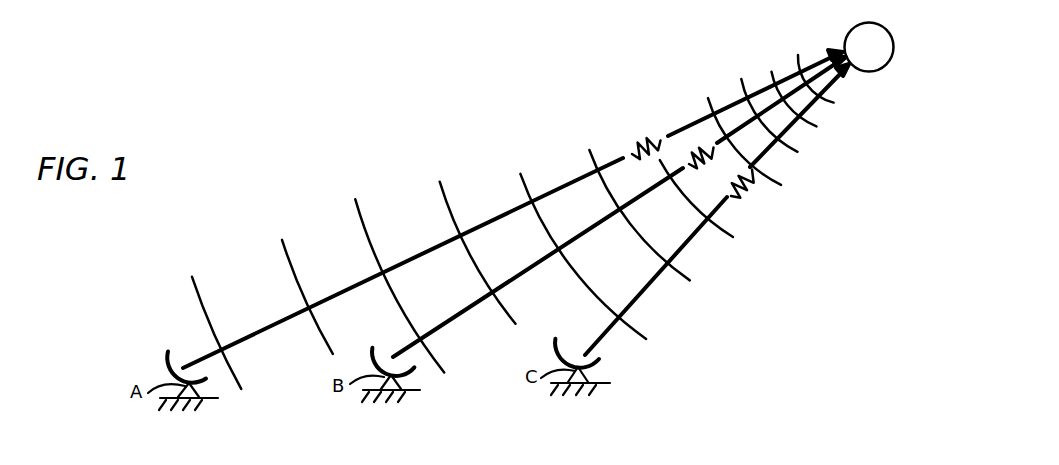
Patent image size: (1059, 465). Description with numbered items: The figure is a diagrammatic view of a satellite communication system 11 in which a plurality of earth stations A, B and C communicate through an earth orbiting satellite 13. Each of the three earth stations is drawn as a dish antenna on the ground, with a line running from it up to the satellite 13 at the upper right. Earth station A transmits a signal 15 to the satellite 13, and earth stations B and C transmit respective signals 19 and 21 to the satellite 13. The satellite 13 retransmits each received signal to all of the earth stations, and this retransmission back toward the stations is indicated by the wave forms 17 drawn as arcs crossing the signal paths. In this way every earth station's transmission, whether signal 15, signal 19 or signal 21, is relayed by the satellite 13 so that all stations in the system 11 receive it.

The satellite communication system 11 is at (428, 114).
The earth orbiting satellite 13 is at (846, 33).
The signal 15 is at (437, 247).
The wave forms 17 is at (577, 277).
The signal 19 is at (538, 260).
The signal 21 is at (692, 236).